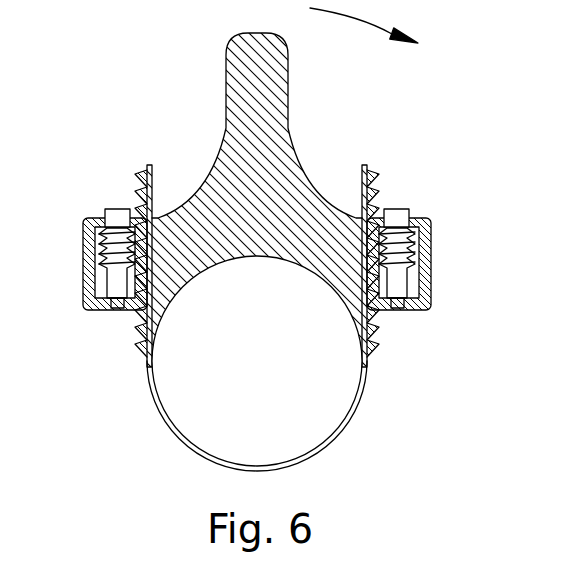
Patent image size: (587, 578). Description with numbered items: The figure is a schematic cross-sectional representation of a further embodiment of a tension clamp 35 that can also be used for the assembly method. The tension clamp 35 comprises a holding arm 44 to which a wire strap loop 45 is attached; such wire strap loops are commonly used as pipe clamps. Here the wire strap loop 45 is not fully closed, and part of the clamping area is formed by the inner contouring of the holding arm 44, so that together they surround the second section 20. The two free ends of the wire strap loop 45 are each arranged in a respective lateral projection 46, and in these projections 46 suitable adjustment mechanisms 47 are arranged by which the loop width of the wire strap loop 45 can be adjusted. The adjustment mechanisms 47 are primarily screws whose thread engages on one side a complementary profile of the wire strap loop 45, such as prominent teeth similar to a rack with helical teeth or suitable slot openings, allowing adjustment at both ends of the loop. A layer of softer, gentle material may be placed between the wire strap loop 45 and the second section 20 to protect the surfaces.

The tension clamp 35 is at (153, 121).
The holding arm 44 is at (288, 97).
The wire strap loop 45 is at (165, 422).
The second section 20 is at (322, 413).
The lateral projection 46 is at (82, 258).
The adjustment mechanism 47 is at (116, 208).